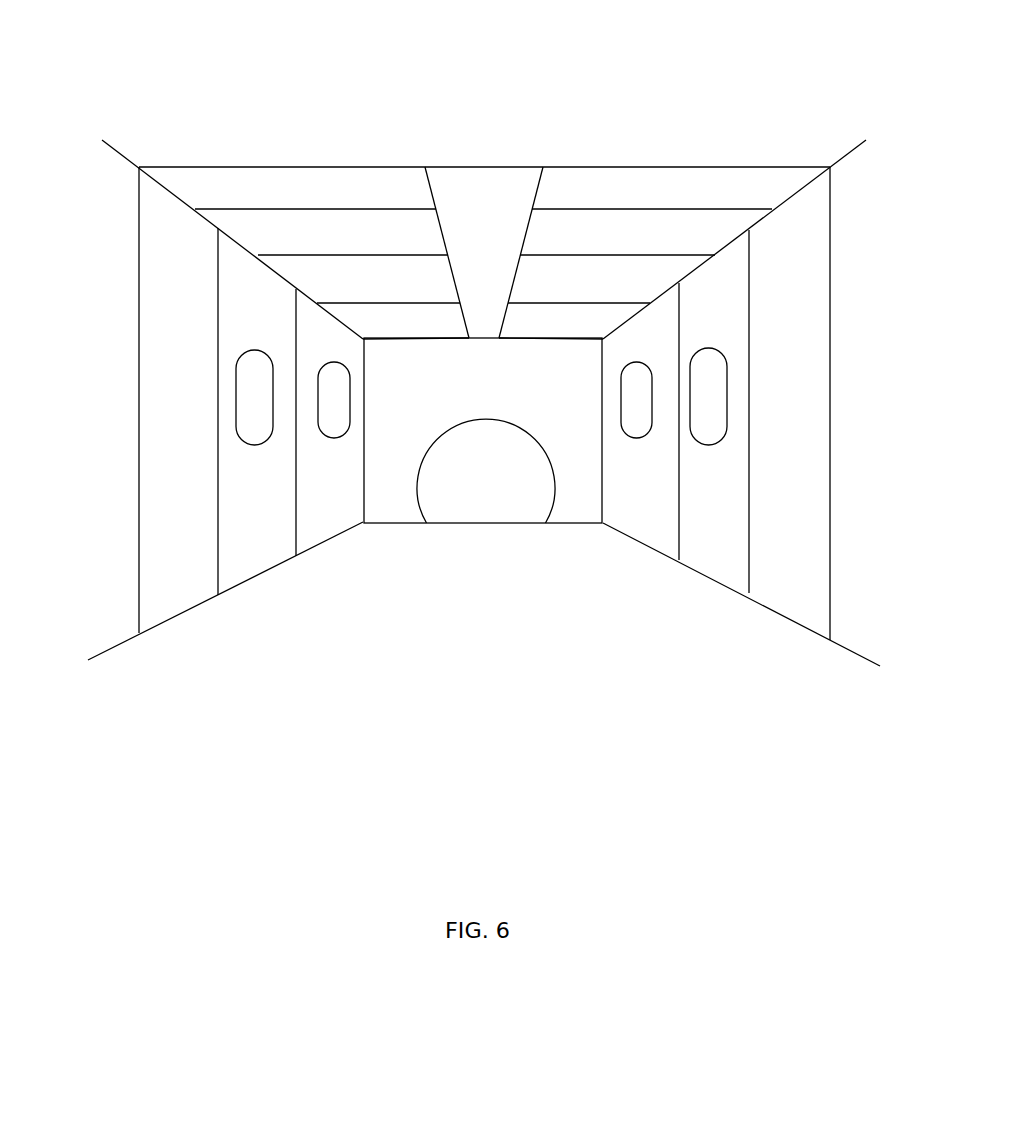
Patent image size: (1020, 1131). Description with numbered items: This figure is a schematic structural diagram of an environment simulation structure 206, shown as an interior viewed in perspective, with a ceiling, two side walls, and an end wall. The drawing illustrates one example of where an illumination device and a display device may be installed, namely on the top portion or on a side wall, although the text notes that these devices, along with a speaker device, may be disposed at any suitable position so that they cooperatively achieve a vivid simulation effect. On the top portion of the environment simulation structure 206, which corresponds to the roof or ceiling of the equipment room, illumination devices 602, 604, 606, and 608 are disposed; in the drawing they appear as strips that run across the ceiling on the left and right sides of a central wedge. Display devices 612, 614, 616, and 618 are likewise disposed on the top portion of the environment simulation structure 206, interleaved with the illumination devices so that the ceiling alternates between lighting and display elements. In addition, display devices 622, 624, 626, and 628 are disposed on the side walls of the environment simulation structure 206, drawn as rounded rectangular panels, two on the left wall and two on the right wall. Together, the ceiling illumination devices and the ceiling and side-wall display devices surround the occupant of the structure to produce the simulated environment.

The environment simulation structure 206 is at (138, 79).
The illumination device 602 is at (311, 203).
The illumination device 604 is at (370, 293).
The illumination device 606 is at (562, 292).
The illumination device 608 is at (655, 204).
The display device 612 is at (337, 248).
The display device 614 is at (399, 335).
The display device 616 is at (543, 334).
The display device 618 is at (607, 246).
The display device 622 is at (260, 370).
The display device 624 is at (338, 385).
The display device 626 is at (707, 372).
The display device 628 is at (630, 382).